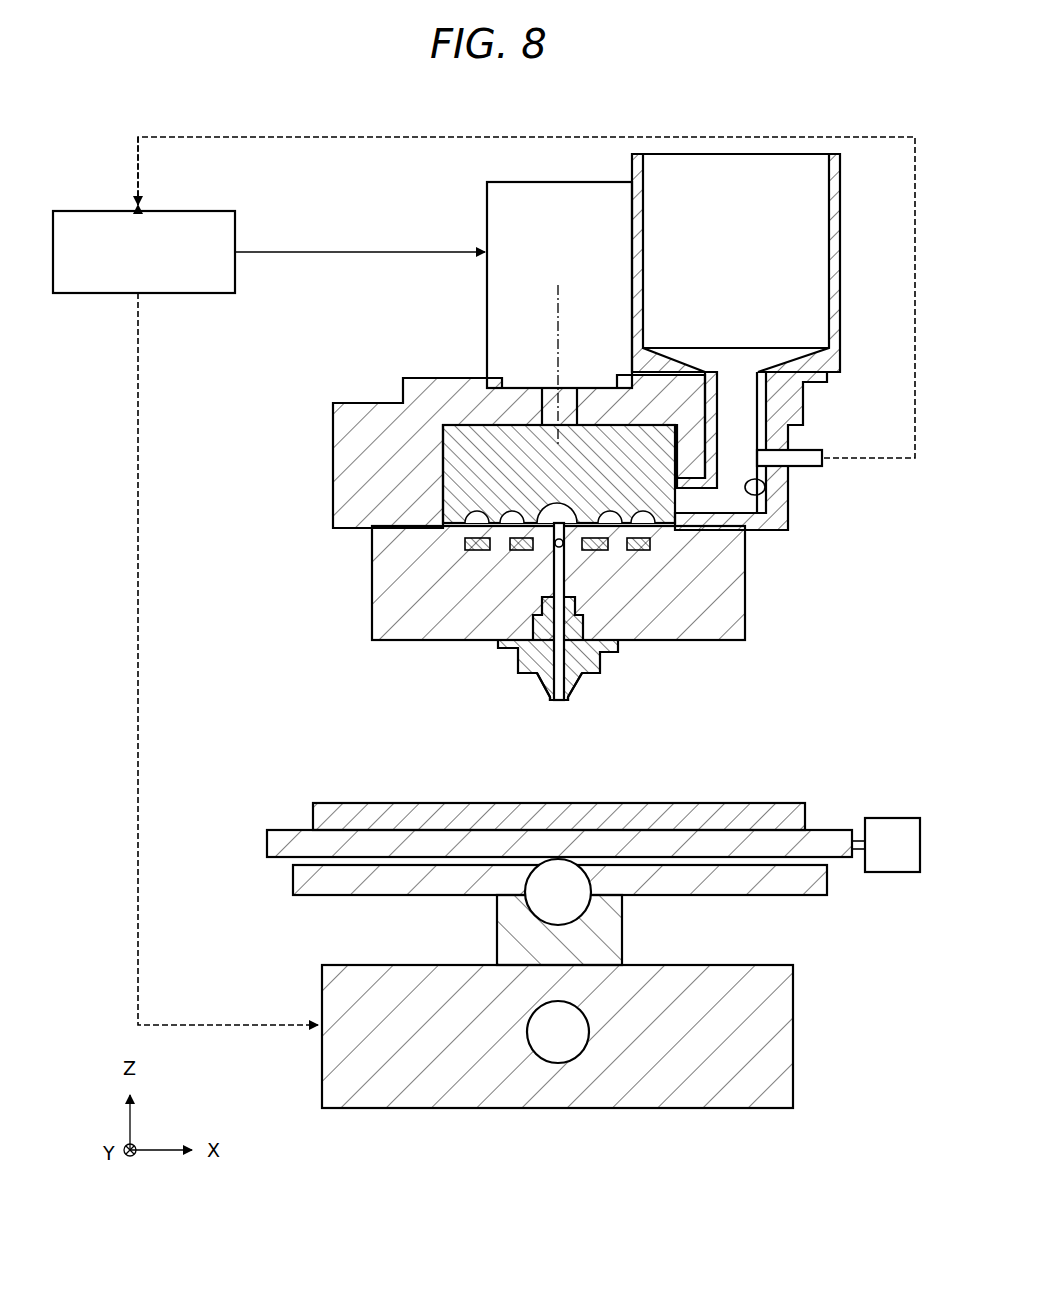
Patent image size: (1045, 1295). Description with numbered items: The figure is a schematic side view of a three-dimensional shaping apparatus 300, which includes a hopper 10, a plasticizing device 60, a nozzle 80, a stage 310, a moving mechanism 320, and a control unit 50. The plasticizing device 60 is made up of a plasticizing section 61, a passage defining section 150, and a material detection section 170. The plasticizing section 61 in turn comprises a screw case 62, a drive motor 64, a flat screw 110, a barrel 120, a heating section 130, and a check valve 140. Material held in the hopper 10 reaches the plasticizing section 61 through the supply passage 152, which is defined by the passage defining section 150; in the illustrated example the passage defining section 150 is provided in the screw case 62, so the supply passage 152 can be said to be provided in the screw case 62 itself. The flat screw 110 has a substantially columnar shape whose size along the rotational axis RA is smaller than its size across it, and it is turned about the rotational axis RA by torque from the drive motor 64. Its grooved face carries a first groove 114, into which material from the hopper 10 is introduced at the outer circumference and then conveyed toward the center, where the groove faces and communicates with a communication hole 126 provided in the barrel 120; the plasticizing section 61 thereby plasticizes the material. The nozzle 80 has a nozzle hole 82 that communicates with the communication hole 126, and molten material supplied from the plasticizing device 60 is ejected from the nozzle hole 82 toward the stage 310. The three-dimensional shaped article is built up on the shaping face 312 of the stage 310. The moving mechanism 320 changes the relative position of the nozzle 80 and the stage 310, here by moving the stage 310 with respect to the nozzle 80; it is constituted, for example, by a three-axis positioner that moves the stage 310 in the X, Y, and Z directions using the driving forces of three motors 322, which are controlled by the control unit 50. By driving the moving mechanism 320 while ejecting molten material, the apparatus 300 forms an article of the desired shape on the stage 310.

The three-dimensional shaping apparatus 300 is at (858, 116).
The control unit 50 is at (97, 237).
The drive motor 64 is at (527, 226).
The rotational axis RA is at (555, 333).
The hopper 10 is at (835, 223).
The plasticizing device 60 is at (841, 385).
The plasticizing section 61 is at (820, 430).
The material detection section 170 is at (823, 456).
The supply passage 152 is at (765, 494).
The passage defining section 150 is at (762, 502).
The screw case 62 is at (388, 450).
The flat screw 110 is at (460, 490).
The first groove 114 is at (647, 517).
The barrel 120 is at (506, 596).
The check valve 140 is at (590, 550).
The heating section 130 is at (637, 550).
The nozzle hole 82 is at (517, 655).
The nozzle 80 is at (540, 680).
The communication hole 126 is at (558, 587).
The moving mechanism 320 is at (266, 817).
The shaping face 312 is at (613, 802).
The stage 310 is at (762, 820).
The motors 322 is at (890, 838).